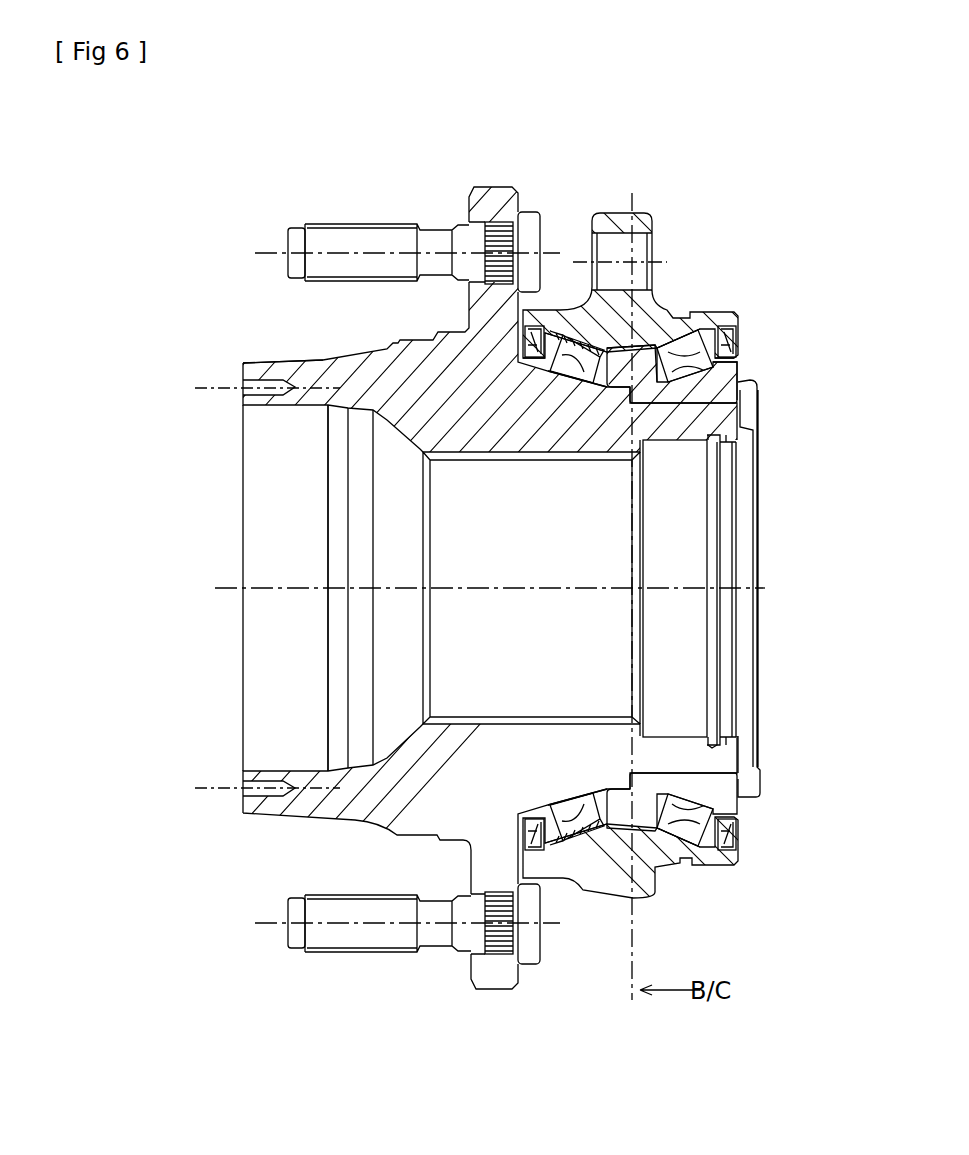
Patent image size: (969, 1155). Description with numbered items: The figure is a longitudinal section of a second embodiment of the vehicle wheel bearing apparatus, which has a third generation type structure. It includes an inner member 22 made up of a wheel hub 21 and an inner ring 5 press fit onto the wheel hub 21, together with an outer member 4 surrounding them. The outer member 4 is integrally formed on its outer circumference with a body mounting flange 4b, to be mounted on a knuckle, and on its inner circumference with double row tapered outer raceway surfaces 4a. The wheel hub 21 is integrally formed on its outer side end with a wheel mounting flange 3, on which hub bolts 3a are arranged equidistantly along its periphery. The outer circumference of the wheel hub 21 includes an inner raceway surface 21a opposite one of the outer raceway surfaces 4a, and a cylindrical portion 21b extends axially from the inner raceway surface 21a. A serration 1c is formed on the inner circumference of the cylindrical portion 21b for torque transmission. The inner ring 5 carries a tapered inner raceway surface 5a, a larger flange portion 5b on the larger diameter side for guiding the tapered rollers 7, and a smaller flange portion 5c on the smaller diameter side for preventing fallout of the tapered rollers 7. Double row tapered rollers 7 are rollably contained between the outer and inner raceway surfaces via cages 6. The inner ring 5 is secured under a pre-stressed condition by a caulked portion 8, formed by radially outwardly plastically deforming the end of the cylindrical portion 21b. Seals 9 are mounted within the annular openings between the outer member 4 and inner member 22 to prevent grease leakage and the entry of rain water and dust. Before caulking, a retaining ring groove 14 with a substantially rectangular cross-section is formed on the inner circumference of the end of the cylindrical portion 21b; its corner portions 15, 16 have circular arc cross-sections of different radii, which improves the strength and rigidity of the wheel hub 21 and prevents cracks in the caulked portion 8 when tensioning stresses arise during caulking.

The serration 1c is at (470, 455).
The wheel mounting flange 3 is at (480, 193).
The hub bolt 3a is at (357, 243).
The outer member 4 is at (484, 577).
The outer raceway surface 4a is at (552, 333).
The body mounting flange 4b is at (612, 215).
The inner ring 5 is at (484, 577).
The inner raceway surface 5a is at (688, 398).
The larger flange portion 5b is at (540, 372).
The smaller flange portion 5c is at (617, 362).
The cage 6 is at (640, 880).
The tapered roller 7 is at (660, 830).
The caulked portion 8 is at (760, 780).
The seal 9 is at (523, 358).
The retaining ring groove 14 is at (712, 512).
The outer side corner portion 15 is at (710, 742).
The inner side corner portion 16 is at (730, 742).
The wheel hub 21 is at (355, 372).
The inner raceway surface 21a is at (598, 357).
The cylindrical portion 21b is at (670, 362).
The inner member 22 is at (386, 447).